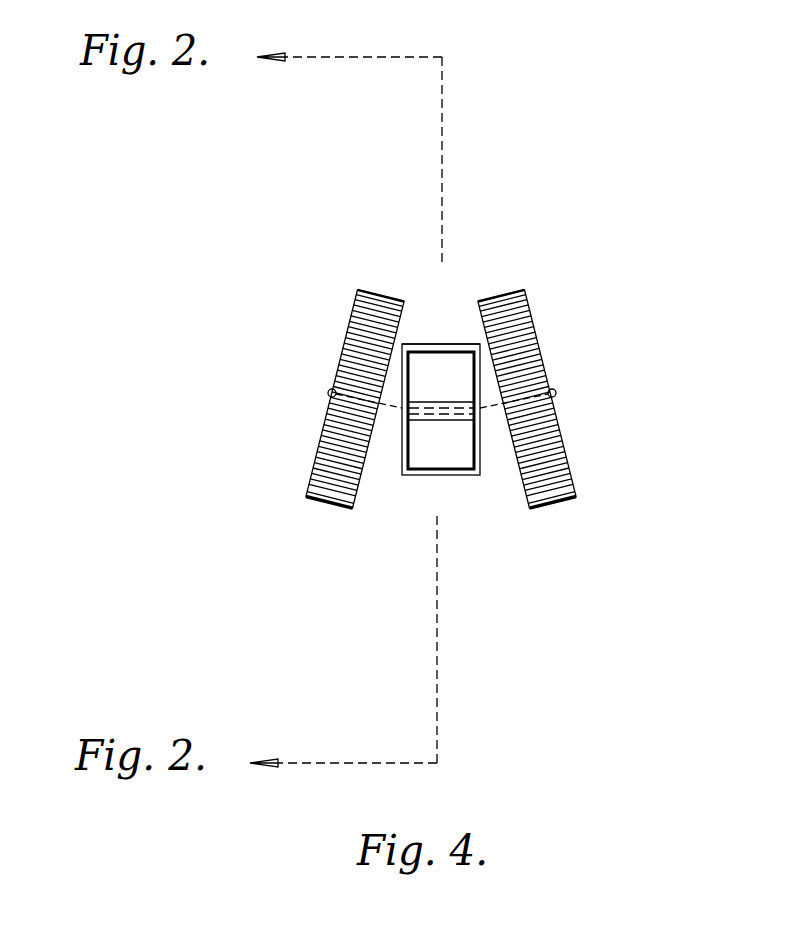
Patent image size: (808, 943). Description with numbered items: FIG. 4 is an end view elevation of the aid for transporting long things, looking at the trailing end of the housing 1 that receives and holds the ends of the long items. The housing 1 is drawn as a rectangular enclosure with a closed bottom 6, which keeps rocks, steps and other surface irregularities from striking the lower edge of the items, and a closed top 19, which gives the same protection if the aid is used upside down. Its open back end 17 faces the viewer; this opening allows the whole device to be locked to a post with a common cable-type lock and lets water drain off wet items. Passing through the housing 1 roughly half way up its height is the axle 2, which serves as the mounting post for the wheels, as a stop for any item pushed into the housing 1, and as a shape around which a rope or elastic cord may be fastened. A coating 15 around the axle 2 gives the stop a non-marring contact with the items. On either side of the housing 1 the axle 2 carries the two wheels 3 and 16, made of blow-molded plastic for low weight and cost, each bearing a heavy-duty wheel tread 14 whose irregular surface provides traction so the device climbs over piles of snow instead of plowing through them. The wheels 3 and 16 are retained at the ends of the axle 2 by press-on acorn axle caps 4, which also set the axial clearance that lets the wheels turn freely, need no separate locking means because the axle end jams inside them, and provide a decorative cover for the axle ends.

The housing 1 is at (482, 460).
The axle 2 is at (393, 410).
The wheel 3 is at (560, 440).
The axle cap 4 is at (328, 392).
The closed bottom 6 is at (428, 475).
The wheel tread 14 is at (322, 503).
The coating 15 is at (435, 402).
The wheel 16 is at (315, 461).
The open back end 17 is at (452, 455).
The closed top 19 is at (420, 345).